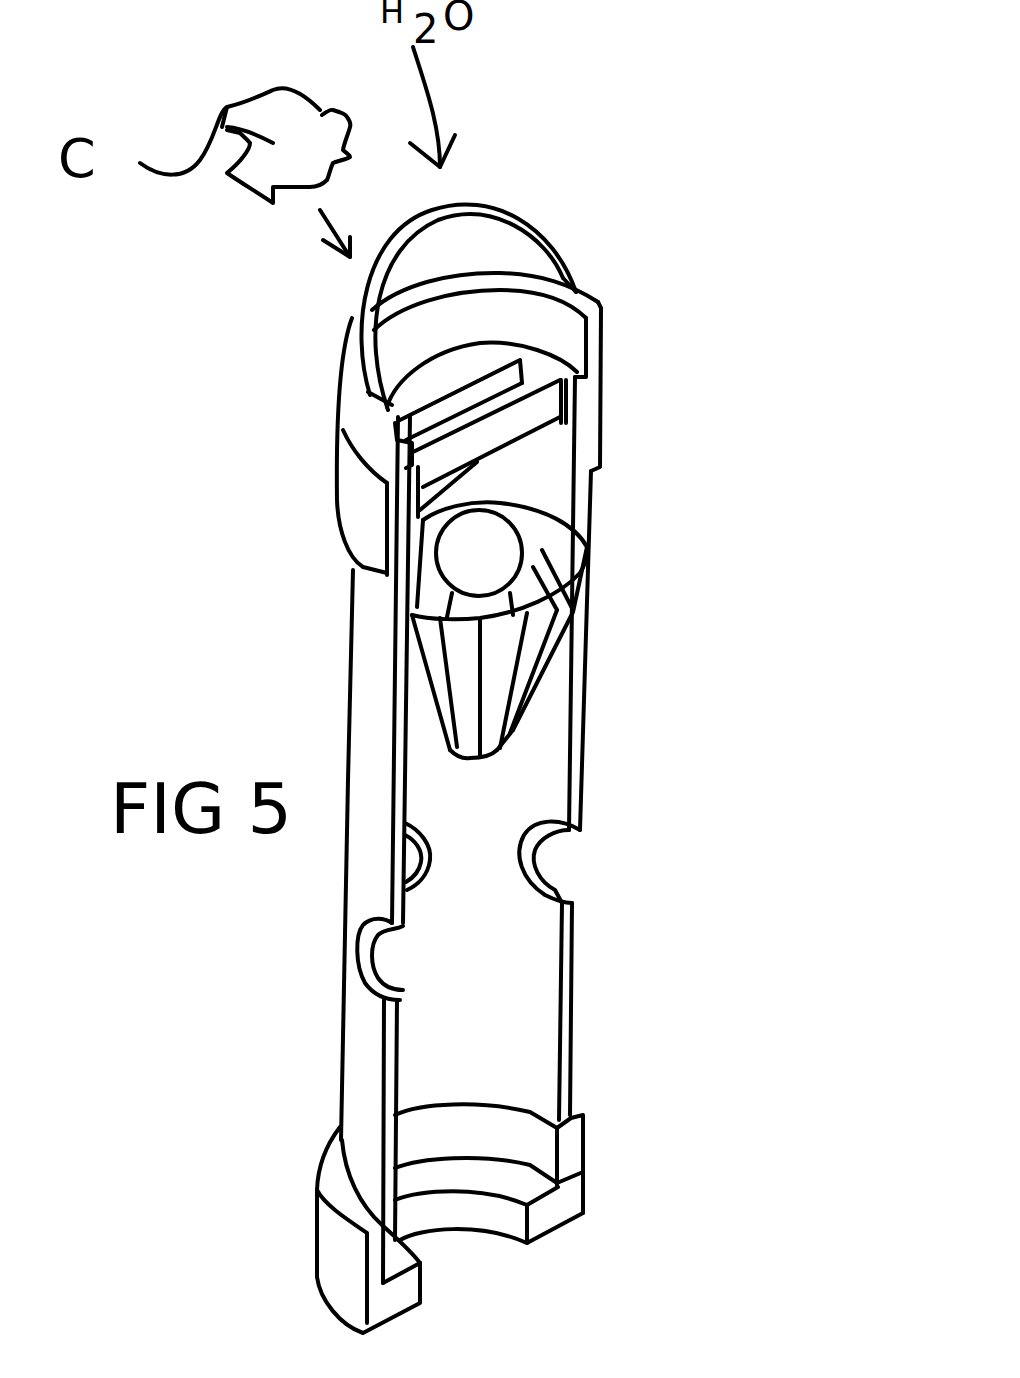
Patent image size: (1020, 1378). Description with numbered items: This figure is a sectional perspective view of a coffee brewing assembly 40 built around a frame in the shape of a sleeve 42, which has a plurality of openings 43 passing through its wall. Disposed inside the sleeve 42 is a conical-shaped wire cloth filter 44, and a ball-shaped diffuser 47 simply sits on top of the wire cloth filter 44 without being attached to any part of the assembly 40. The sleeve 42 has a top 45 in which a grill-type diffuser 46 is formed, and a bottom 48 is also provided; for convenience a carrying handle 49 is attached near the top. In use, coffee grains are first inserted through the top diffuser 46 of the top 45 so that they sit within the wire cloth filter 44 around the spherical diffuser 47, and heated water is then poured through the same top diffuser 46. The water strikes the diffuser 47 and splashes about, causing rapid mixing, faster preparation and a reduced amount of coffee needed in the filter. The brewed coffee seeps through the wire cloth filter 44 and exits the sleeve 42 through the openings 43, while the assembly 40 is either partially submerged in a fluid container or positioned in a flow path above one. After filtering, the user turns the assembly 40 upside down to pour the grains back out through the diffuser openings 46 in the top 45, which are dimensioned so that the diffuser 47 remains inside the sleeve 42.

The assembly 40 is at (687, 673).
The sleeve 42 is at (353, 683).
The openings 43 is at (553, 880).
The wire cloth filter 44 is at (583, 575).
The top 45 is at (340, 507).
The grill-type diffuser 46 is at (413, 447).
The ball-shaped diffuser 47 is at (513, 535).
The bottom 48 is at (587, 1207).
The carrying handle 49 is at (490, 213).